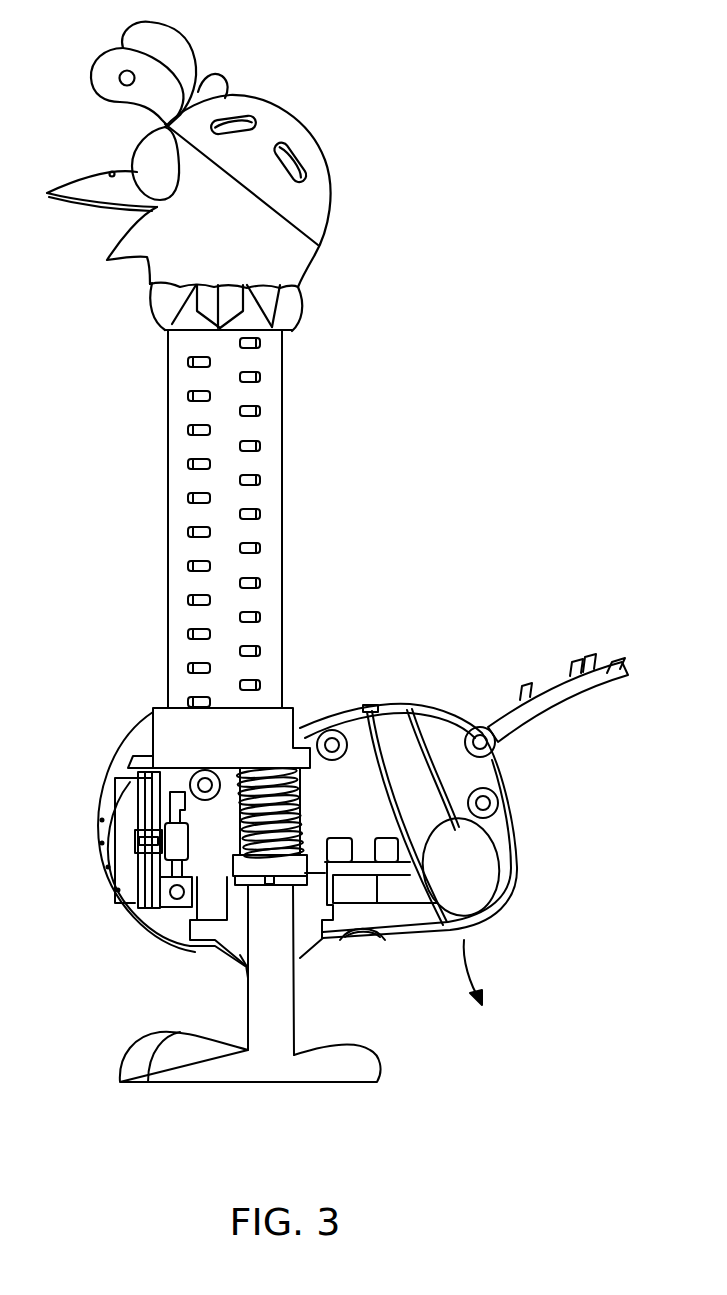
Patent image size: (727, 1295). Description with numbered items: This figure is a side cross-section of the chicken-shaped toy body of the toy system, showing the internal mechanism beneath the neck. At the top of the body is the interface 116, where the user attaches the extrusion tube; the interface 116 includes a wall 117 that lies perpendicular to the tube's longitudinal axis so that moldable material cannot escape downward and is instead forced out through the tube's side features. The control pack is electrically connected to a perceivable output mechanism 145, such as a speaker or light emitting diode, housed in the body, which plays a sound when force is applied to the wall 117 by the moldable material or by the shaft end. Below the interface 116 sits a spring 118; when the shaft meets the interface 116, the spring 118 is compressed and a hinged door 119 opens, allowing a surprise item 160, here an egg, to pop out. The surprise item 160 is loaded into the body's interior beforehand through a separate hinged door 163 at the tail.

The interface 116 is at (202, 720).
The wall 117 is at (185, 765).
The spring 118 is at (237, 860).
The perceivable output mechanism 145 is at (103, 838).
The surprise item 160 is at (453, 867).
The hinged door 163 is at (585, 660).
The hinged door 119 is at (503, 905).